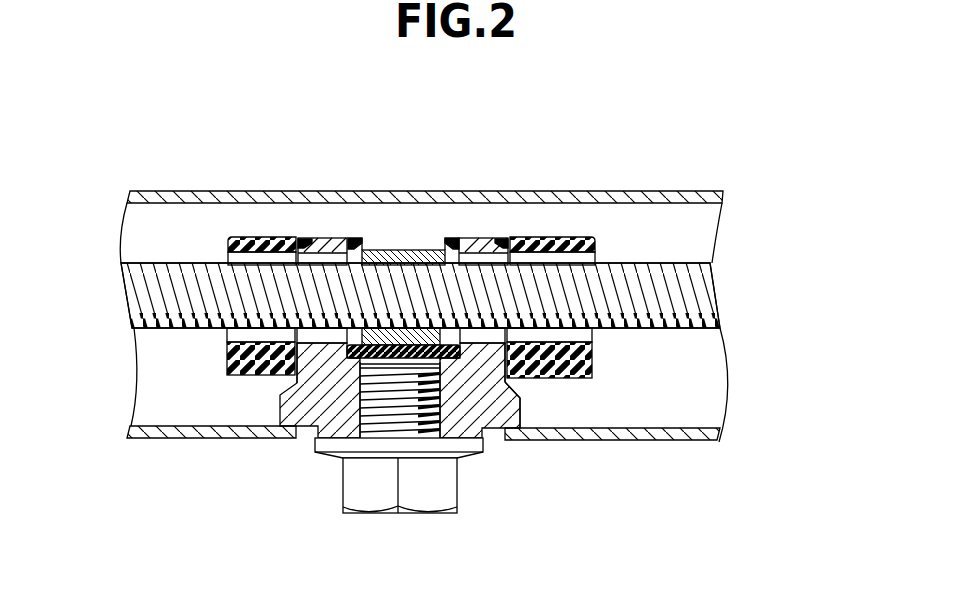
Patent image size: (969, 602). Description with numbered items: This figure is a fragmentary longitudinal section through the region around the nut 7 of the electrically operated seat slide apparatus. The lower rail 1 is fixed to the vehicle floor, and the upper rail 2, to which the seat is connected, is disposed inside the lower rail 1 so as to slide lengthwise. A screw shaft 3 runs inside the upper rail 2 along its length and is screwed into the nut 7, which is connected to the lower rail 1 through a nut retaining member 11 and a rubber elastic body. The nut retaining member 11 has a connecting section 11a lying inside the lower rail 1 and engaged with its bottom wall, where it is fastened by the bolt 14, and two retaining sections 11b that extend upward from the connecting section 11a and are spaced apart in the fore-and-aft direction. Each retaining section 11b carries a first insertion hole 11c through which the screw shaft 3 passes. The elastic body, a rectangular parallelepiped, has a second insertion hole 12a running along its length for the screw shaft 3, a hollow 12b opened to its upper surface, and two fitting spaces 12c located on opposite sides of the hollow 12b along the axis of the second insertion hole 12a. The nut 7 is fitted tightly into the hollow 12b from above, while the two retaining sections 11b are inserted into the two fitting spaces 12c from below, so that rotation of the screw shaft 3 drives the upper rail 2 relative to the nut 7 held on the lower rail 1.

The lower rail 1 is at (700, 435).
The upper rail 2 is at (694, 200).
The screw shaft 3 is at (687, 297).
The nut 7 is at (412, 248).
The nut retaining member 11 is at (392, 421).
The connecting section 11a is at (515, 410).
The retaining sections 11b is at (333, 245).
The first insertion hole 11c is at (323, 340).
The second insertion hole 12a is at (228, 252).
The hollow 12b is at (386, 247).
The fitting spaces 12c is at (318, 240).
The bolt 14 is at (390, 497).